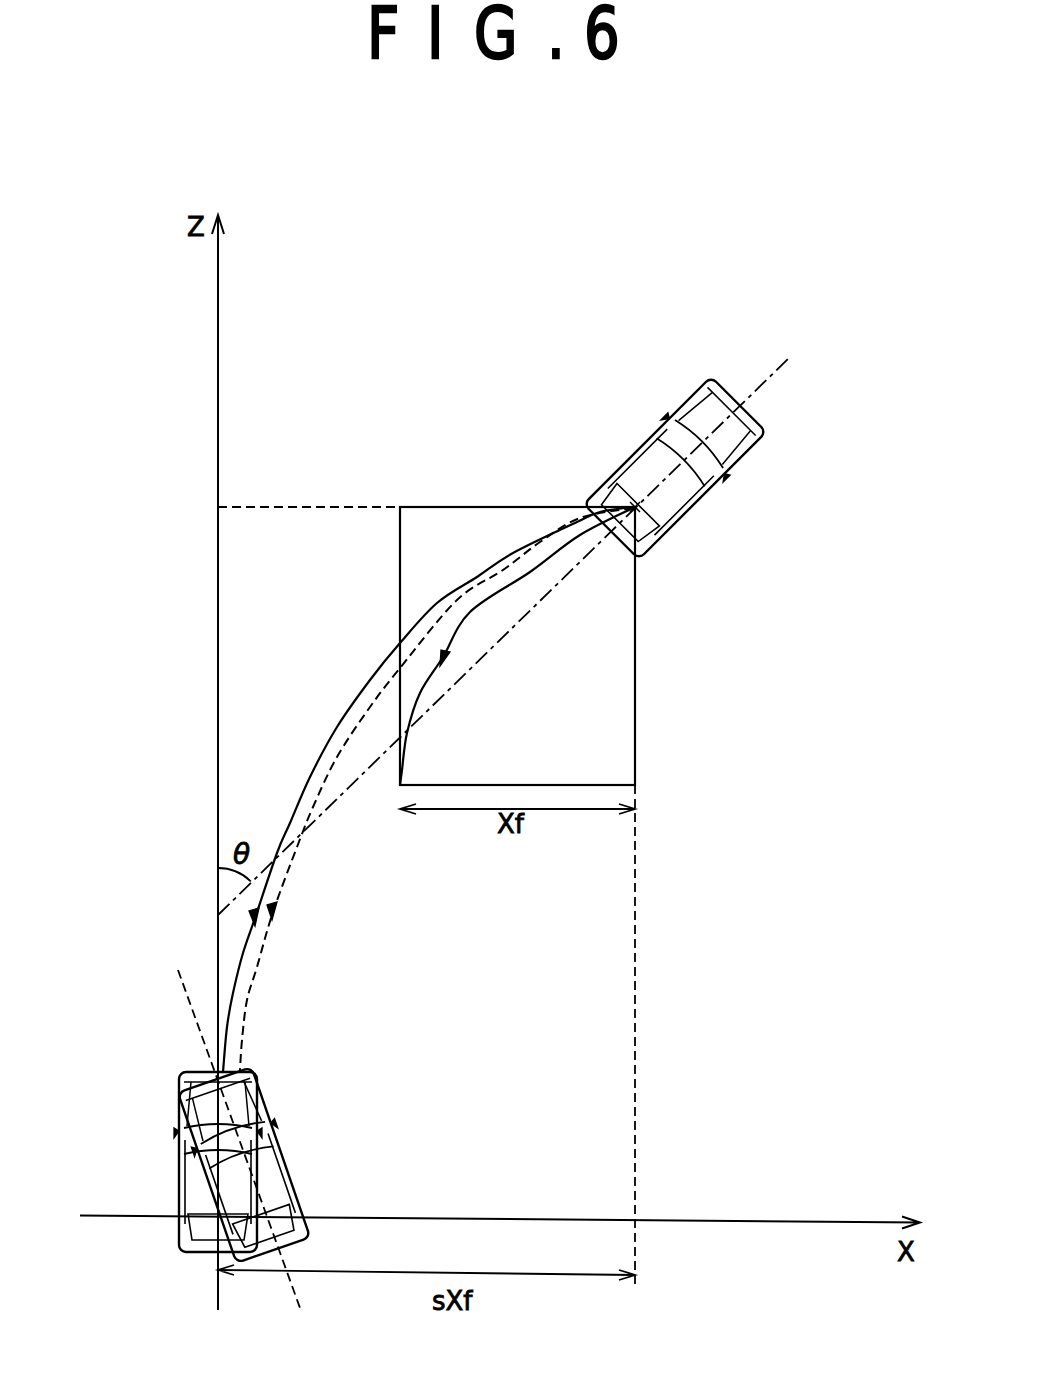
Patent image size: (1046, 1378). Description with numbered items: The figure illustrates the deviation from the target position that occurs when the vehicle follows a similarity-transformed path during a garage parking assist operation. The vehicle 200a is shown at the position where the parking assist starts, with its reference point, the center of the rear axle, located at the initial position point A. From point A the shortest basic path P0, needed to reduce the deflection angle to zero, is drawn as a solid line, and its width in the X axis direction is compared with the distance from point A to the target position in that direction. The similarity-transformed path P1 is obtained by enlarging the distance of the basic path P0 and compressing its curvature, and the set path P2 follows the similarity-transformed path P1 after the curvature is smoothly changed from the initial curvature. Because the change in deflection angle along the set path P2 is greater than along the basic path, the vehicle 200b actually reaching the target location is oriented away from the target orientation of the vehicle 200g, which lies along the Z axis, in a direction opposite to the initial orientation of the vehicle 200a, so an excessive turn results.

The vehicle at position to start parking assist operation 200a is at (744, 466).
The vehicle when actually reaching target location 200b is at (272, 1111).
The vehicle at target orientation 200g is at (178, 1116).
The basic path P0 is at (482, 611).
The similarity-transformed path P1 is at (445, 600).
The set path P2 is at (250, 1017).
The initial position point (reference point) A is at (628, 505).